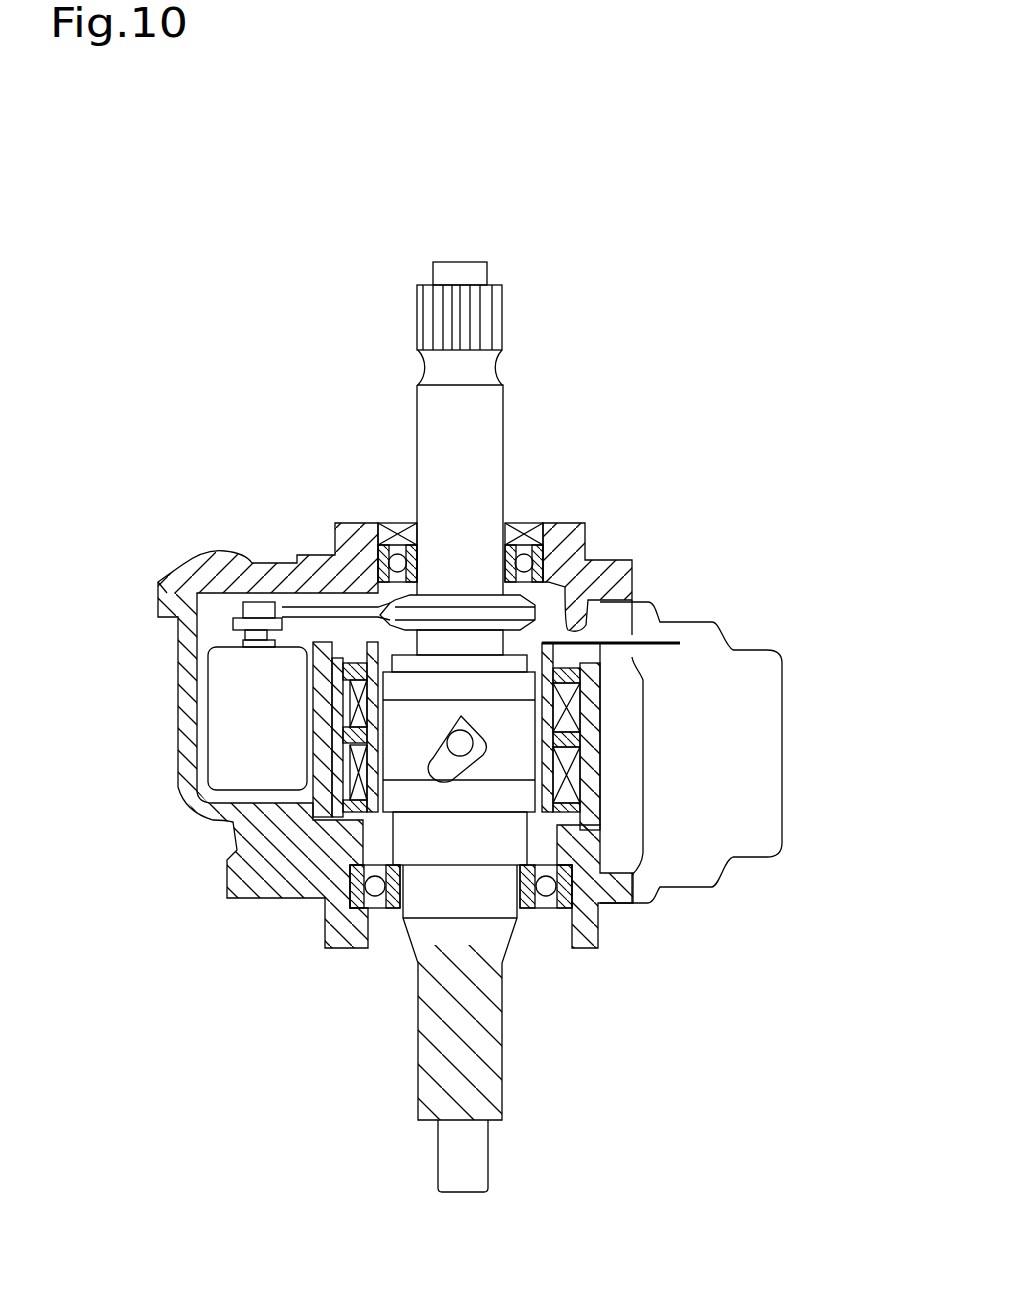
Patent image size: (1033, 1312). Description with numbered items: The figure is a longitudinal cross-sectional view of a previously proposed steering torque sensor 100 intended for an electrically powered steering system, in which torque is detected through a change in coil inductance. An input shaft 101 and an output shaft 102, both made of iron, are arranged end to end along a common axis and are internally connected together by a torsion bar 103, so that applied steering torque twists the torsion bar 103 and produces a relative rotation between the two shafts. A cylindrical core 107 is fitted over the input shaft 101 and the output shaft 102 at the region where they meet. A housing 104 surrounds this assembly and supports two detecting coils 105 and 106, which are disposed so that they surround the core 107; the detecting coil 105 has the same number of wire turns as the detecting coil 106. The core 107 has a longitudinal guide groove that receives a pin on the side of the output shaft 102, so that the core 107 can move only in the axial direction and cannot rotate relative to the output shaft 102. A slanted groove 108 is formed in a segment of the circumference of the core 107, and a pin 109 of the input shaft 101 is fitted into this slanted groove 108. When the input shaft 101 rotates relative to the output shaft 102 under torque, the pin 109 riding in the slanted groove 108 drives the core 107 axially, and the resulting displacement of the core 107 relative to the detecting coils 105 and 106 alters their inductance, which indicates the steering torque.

The steering torque sensor 100 is at (681, 488).
The input shaft 101 is at (490, 438).
The output shaft 102 is at (570, 1112).
The torsion bar 103 is at (468, 268).
The housing 104 is at (250, 877).
The detecting coil 105 is at (565, 708).
The detecting coil 106 is at (563, 777).
The cylindrical core 107 is at (407, 800).
The slanted groove 108 is at (460, 748).
The pin 109 is at (470, 748).